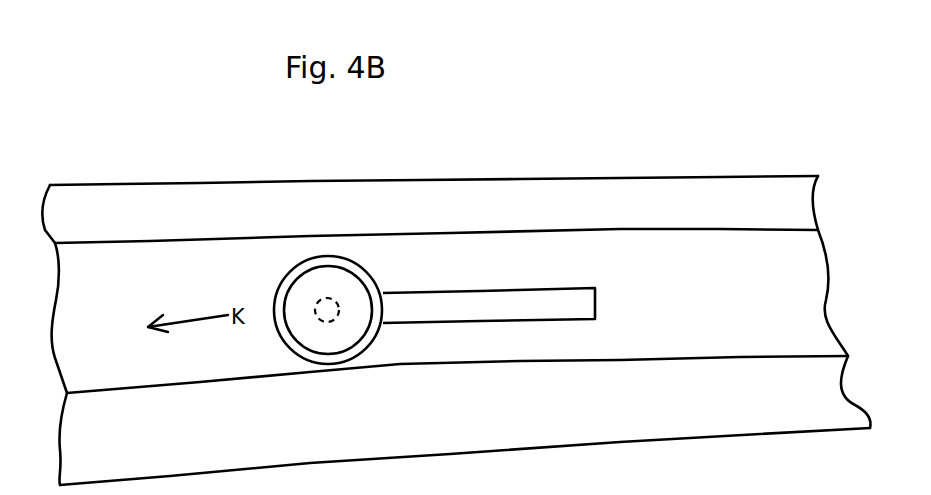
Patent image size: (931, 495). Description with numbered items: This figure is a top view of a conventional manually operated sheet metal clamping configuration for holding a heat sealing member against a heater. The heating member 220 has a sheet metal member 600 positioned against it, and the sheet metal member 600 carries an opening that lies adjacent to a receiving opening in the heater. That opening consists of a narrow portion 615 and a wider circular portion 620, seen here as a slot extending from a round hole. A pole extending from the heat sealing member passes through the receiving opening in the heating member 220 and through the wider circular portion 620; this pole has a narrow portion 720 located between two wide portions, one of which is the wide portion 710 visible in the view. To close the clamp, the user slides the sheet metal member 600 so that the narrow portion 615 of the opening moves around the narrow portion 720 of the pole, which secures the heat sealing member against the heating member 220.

The narrow portion of the pole 720 is at (345, 303).
The wide portion of the pole 710 is at (342, 284).
The narrow portion of the opening 615 is at (467, 287).
The wider circular portion of the opening 620 is at (373, 338).
The sheet metal member 600 is at (711, 301).
The heating member 220 is at (680, 406).